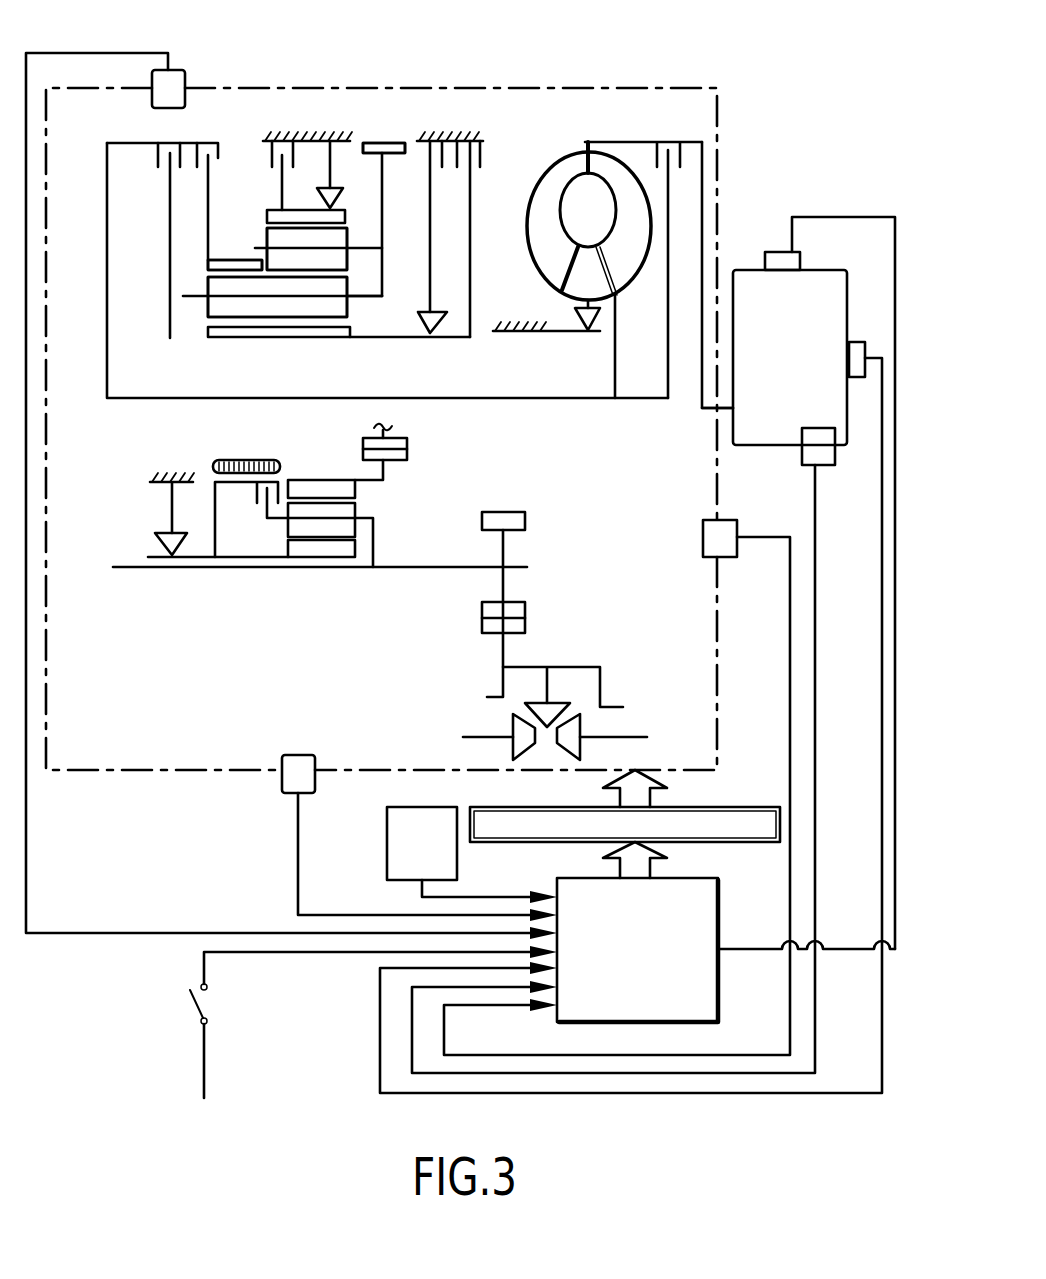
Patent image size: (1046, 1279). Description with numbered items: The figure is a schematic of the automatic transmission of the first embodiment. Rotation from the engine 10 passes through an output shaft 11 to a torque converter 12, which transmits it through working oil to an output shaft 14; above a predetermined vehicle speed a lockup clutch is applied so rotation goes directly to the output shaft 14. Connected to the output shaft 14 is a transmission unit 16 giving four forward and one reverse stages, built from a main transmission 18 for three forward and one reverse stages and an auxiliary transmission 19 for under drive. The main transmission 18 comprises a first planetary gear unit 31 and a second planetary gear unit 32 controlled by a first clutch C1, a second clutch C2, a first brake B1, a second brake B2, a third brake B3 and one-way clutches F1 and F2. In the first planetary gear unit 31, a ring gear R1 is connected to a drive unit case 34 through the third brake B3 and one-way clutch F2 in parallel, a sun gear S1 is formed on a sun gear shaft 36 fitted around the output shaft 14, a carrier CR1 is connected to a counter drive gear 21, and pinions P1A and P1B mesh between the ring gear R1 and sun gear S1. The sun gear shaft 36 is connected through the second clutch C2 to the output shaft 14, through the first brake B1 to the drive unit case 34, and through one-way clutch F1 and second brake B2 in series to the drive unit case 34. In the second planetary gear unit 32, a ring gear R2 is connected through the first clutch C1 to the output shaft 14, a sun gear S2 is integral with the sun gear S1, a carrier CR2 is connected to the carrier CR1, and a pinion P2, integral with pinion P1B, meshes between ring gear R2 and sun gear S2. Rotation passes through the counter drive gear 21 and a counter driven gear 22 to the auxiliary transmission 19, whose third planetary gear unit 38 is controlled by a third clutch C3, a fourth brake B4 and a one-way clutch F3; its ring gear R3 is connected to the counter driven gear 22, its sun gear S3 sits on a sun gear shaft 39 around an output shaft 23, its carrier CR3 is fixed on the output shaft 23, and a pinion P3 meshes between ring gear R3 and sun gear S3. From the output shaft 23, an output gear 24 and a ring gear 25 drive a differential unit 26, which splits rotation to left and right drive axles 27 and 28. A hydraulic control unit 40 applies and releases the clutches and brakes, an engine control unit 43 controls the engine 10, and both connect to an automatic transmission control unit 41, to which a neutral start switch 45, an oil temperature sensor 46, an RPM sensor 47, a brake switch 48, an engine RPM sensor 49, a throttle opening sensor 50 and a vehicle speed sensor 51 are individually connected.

The engine 10 is at (826, 268).
The output shaft 11 is at (704, 172).
The torque converter 12 is at (598, 118).
The output shaft 14 is at (600, 398).
The transmission unit 16 is at (503, 131).
The main transmission 18 is at (398, 108).
The auxiliary transmission 19 is at (272, 608).
The counter drive gear 21 is at (375, 142).
The counter driven gear 22 is at (408, 462).
The output shaft 23 is at (447, 570).
The output gear 24 is at (507, 513).
The ring gear 25 is at (527, 625).
The differential unit 26 is at (618, 650).
The left drive axle 27 is at (478, 736).
The right drive axle 28 is at (623, 737).
The first planetary gear unit 31 is at (368, 238).
The second planetary gear unit 32 is at (228, 248).
The drive unit case 34 is at (300, 133).
The sun gear shaft 36 is at (208, 336).
The third planetary gear unit 38 is at (343, 596).
The sun gear shaft 39 is at (228, 567).
The hydraulic control unit 40 is at (716, 807).
The automatic transmission control unit 41 is at (690, 878).
The engine control unit 43 is at (790, 235).
The neutral start switch 45 is at (387, 848).
The oil temperature sensor 46 is at (282, 787).
The RPM sensor 47 is at (181, 69).
The brake switch 48 is at (206, 1003).
The engine RPM sensor 49 is at (855, 341).
The throttle opening sensor 50 is at (824, 466).
The vehicle speed sensor 51 is at (733, 520).
The first brake B1 is at (468, 239).
The second brake B2 is at (389, 168).
The third brake B3 is at (290, 175).
The fourth brake B4 is at (263, 463).
The first clutch C1 is at (174, 201).
The second clutch C2 is at (165, 240).
The third clutch C3 is at (251, 519).
The one-way clutch F1 is at (440, 302).
The one-way clutch F2 is at (338, 183).
The one-way clutch F3 is at (209, 515).
The ring gear R1 is at (345, 222).
The ring gear R2 is at (210, 262).
The ring gear R3 is at (357, 487).
The pinion P1A is at (348, 262).
The pinion P1B is at (348, 308).
The pinion P2 is at (210, 285).
The pinion P3 is at (357, 508).
The sun gear S1 is at (355, 346).
The sun gear S2 is at (208, 333).
The sun gear S3 is at (288, 548).
The carrier CR1 is at (390, 265).
The carrier CR2 is at (252, 293).
The carrier CR3 is at (373, 545).